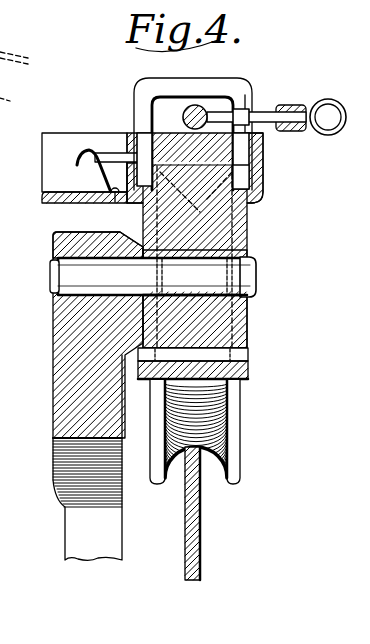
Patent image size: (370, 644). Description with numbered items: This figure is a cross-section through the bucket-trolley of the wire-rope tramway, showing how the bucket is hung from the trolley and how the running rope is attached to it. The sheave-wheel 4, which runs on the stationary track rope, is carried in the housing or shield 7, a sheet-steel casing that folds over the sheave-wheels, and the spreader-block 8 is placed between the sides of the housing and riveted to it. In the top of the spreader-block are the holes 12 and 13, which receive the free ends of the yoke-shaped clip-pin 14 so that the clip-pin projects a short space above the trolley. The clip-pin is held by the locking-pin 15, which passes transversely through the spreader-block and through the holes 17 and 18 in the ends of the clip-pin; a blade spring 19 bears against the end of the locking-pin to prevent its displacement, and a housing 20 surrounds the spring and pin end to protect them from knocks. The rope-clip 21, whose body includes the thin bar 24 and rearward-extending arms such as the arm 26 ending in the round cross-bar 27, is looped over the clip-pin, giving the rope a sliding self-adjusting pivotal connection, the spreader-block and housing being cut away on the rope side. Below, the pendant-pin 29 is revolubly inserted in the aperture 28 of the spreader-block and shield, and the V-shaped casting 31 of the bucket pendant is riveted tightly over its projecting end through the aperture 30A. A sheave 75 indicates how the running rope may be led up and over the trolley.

The sheave-wheel 4 is at (233, 413).
The housing or shield 7 is at (250, 330).
The spreader-block 8 is at (200, 225).
The hole 12 is at (140, 203).
The hole 13 is at (263, 194).
The clip-pin 14 is at (193, 88).
The locking-pin 15 is at (107, 147).
The hole 17 is at (184, 106).
The hole 18 is at (250, 141).
The spring 19 is at (93, 177).
The housing 20 is at (43, 200).
The rope-clip 21 is at (262, 113).
The bar 24 is at (303, 131).
The arm 26 is at (246, 92).
The cross-bar 27 is at (158, 96).
The aperture 28 is at (202, 296).
The pendant-pin 29 is at (153, 277).
The aperture 30A is at (77, 258).
The V-shaped casting 31 is at (52, 375).
The sheave 75 is at (8, 133).